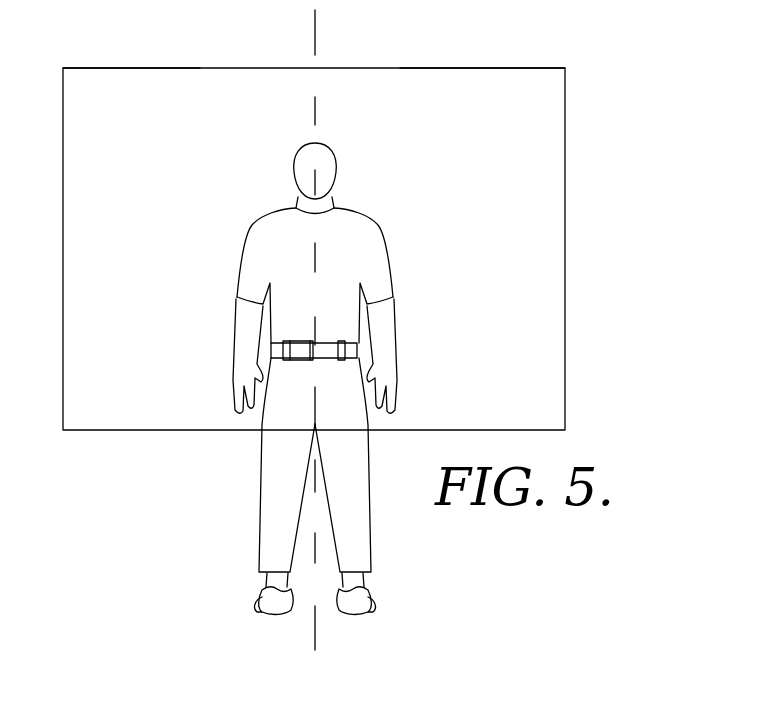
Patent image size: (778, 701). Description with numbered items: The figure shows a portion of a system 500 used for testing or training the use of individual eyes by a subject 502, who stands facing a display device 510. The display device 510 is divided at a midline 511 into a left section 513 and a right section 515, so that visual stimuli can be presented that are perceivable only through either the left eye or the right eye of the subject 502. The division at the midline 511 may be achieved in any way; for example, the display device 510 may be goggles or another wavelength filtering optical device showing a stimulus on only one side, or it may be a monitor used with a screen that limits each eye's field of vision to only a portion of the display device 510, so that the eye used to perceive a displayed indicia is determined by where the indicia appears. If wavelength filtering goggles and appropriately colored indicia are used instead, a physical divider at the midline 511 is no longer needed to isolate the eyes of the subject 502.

The system 500 is at (637, 383).
The subject 502 is at (258, 490).
The display device 510 is at (540, 67).
The midline 511 is at (315, 28).
The left section 513 is at (120, 62).
The right section 515 is at (447, 58).